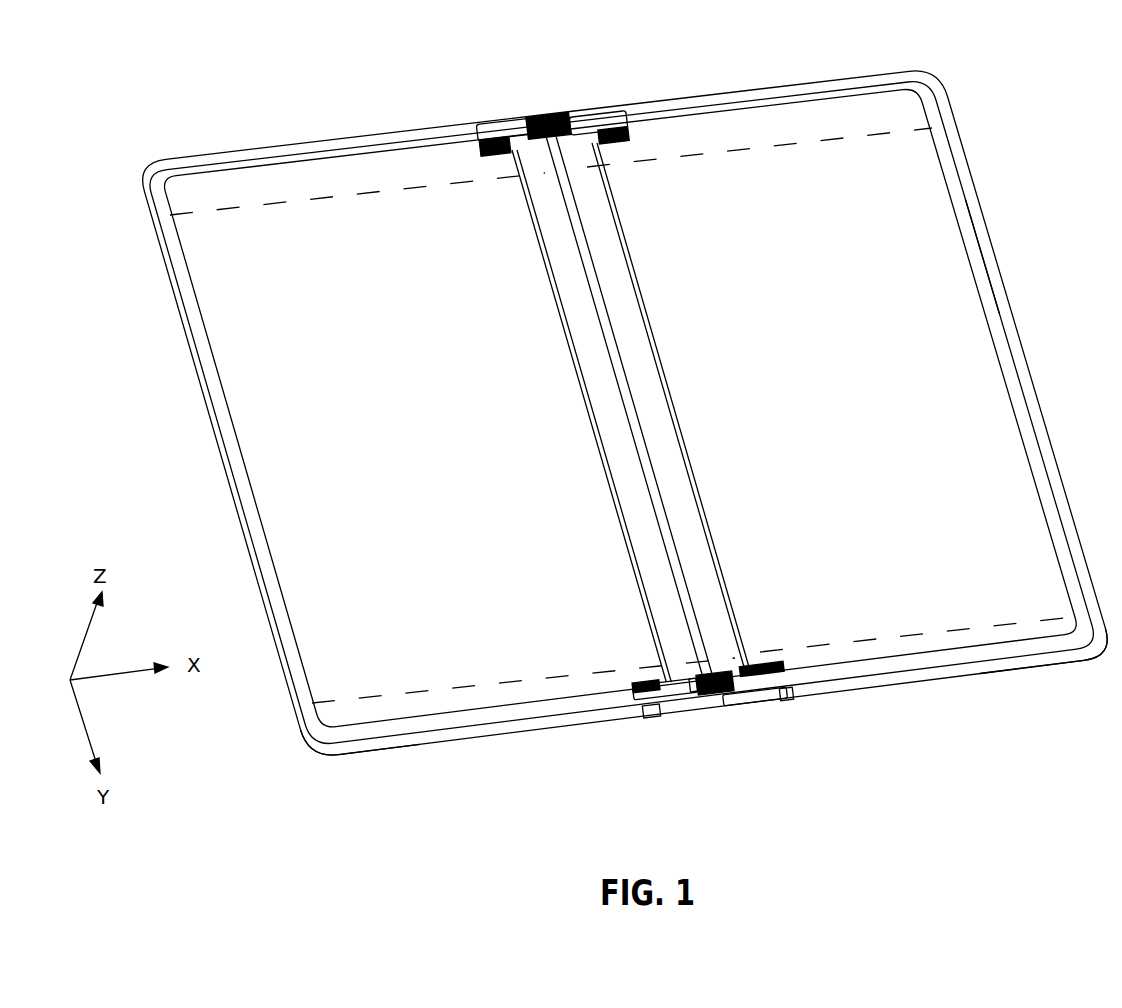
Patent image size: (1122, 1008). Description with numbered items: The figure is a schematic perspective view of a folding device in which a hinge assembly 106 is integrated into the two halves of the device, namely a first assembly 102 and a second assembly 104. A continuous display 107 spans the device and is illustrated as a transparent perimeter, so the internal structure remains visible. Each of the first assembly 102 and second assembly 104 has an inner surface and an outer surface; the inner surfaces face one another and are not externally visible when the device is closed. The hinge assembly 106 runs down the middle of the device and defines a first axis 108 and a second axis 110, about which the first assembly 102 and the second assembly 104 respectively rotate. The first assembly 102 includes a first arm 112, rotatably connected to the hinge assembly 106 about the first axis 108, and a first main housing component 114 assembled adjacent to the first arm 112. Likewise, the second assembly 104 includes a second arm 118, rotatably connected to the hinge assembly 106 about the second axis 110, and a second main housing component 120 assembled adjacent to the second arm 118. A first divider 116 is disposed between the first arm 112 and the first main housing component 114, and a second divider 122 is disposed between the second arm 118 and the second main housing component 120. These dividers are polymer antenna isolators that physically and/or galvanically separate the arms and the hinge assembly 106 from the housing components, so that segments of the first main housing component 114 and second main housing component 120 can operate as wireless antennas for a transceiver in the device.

The first assembly 102 is at (240, 151).
The second assembly 104 is at (743, 92).
The hinge assembly 106 is at (552, 170).
The continuous display 107 is at (983, 307).
The first axis 108 is at (527, 117).
The second axis 110 is at (552, 112).
The first arm 112 is at (675, 705).
The first main housing component 114 is at (402, 738).
The first divider 116 is at (652, 710).
The second arm 118 is at (743, 702).
The second main housing component 120 is at (1032, 660).
The second divider 122 is at (785, 700).